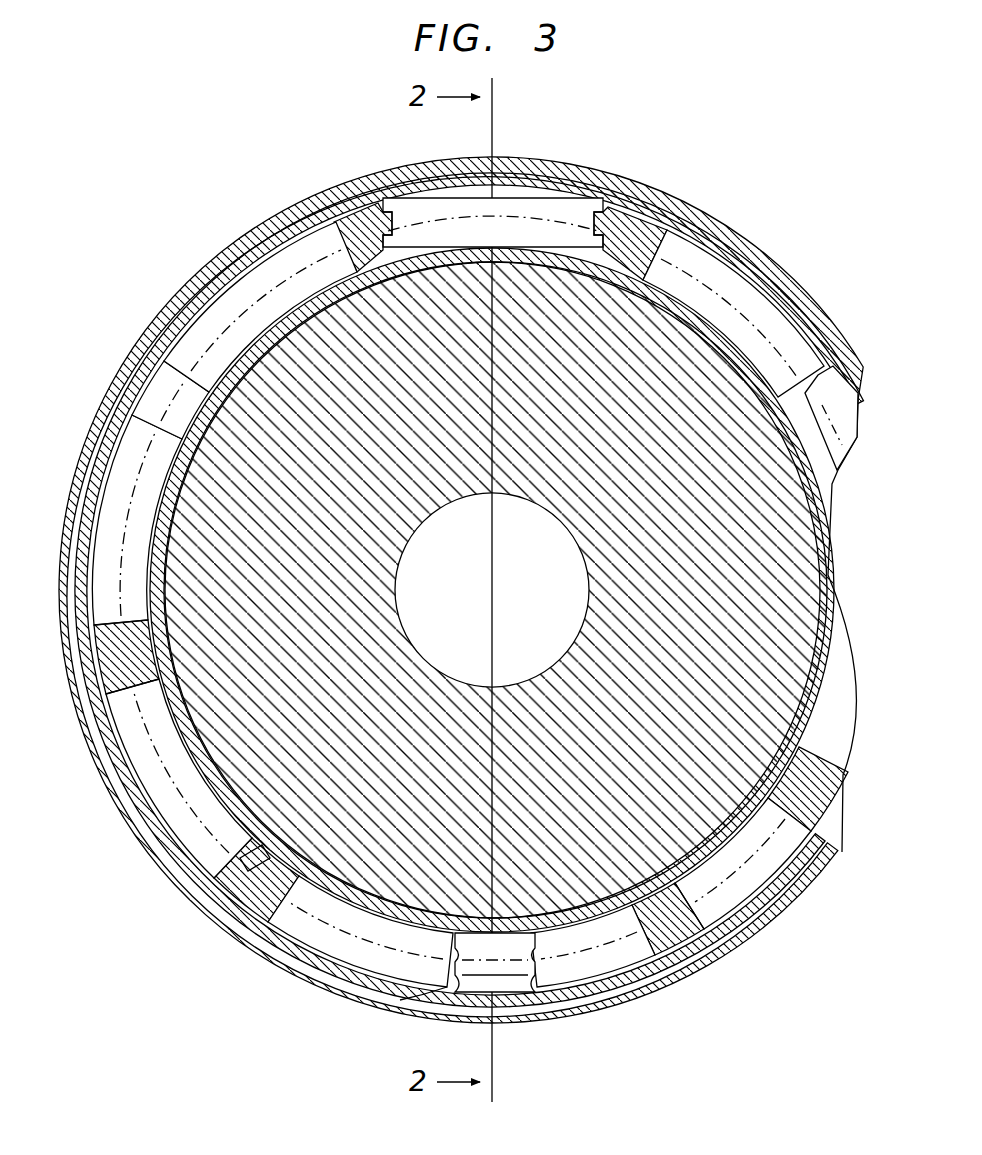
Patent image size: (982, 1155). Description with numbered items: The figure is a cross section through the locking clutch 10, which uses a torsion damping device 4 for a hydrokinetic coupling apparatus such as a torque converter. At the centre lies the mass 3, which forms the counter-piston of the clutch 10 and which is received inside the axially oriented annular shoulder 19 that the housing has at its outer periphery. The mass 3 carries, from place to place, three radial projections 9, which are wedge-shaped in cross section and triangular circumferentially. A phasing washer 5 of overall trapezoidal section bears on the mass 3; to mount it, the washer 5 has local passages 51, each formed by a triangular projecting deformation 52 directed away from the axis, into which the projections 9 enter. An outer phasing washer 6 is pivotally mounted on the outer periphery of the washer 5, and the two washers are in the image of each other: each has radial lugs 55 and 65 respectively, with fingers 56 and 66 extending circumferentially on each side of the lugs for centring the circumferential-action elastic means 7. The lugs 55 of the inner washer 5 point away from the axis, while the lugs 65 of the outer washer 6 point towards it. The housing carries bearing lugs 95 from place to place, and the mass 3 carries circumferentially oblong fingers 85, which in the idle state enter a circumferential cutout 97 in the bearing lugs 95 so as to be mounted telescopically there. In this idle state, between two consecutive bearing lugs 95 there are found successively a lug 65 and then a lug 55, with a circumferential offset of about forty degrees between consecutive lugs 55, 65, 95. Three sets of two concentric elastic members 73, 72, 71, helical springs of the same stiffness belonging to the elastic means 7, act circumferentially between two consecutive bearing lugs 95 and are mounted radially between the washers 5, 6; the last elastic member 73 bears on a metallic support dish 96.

The mass 3 is at (222, 283).
The torsion damping device 4 is at (243, 288).
The phasing washer 5 is at (670, 292).
The outer phasing washer 6 is at (762, 927).
The circumferential-action elastic means 7 is at (728, 256).
The radial projections 9 is at (150, 547).
The locking clutch 10 is at (240, 815).
The axially oriented annular shoulder 19 is at (620, 177).
The passages 51 is at (232, 905).
The projecting deformation 52 is at (812, 862).
The radial lugs 55 is at (268, 905).
The fingers 56 is at (395, 186).
The radial lugs 65 is at (652, 208).
The fingers 66 is at (662, 958).
The elastic member 71 is at (265, 255).
The elastic member 72 is at (537, 198).
The elastic member 73 is at (777, 313).
The fingers 85 is at (518, 980).
The bearing lugs 95 is at (502, 993).
The support dish 96 is at (430, 1010).
The circumferential cutout 97 is at (200, 425).